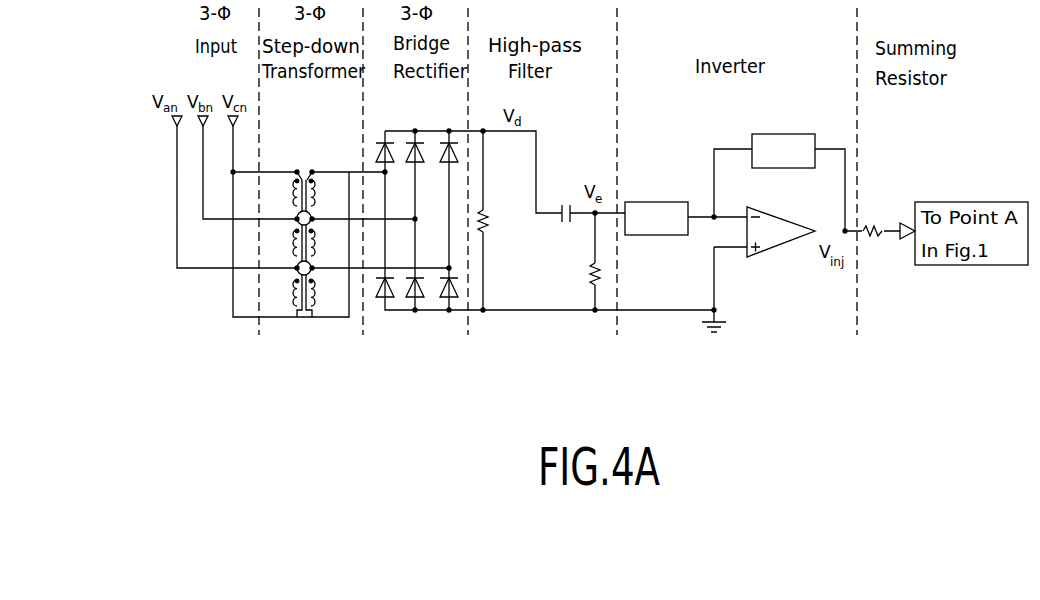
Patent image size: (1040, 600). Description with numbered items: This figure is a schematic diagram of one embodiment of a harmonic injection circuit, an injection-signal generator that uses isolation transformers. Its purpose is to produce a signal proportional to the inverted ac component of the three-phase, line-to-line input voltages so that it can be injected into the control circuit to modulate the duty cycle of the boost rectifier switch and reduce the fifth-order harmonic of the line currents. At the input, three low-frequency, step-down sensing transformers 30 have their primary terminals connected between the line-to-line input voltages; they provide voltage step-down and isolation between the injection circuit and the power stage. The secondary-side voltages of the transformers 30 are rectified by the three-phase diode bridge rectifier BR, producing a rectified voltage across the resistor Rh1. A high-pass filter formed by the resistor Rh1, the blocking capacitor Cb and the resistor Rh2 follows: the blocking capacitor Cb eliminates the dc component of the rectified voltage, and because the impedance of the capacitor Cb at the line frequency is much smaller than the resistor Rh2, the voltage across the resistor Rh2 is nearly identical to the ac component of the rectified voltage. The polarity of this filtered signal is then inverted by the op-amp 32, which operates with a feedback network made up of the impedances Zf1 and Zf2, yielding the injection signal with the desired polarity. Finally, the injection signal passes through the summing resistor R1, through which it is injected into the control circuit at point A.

The step-down sensing transformer 30 is at (315, 197).
The op-amp 32 is at (770, 253).
The three-phase bridge rectifier BR is at (429, 209).
The resistor Rh1 is at (498, 219).
The resistor Rh2 is at (572, 270).
The blocking capacitor Cb is at (559, 227).
The feedback network impedance Zf1 is at (656, 218).
The feedback network impedance Zf2 is at (783, 151).
The summing resistor R1 is at (873, 219).